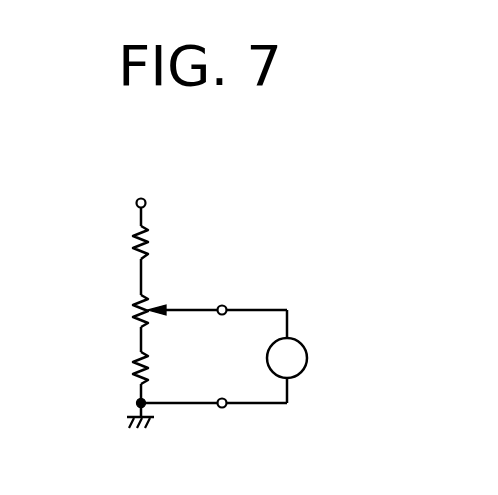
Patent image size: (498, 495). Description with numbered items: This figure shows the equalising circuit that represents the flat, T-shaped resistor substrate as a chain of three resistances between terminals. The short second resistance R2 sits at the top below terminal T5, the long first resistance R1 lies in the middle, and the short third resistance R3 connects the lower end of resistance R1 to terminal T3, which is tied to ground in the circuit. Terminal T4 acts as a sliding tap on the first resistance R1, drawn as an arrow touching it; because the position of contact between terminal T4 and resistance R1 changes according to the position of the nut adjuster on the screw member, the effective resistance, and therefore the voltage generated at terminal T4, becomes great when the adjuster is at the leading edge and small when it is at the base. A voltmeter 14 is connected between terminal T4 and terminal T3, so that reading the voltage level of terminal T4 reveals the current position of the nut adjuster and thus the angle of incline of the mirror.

The voltmeter 14 is at (305, 350).
The terminal T5 is at (141, 193).
The terminal T4 is at (226, 294).
The terminal T3 is at (214, 386).
The first resistance R1 is at (122, 323).
The second resistance R2 is at (113, 260).
The third resistance R3 is at (113, 384).